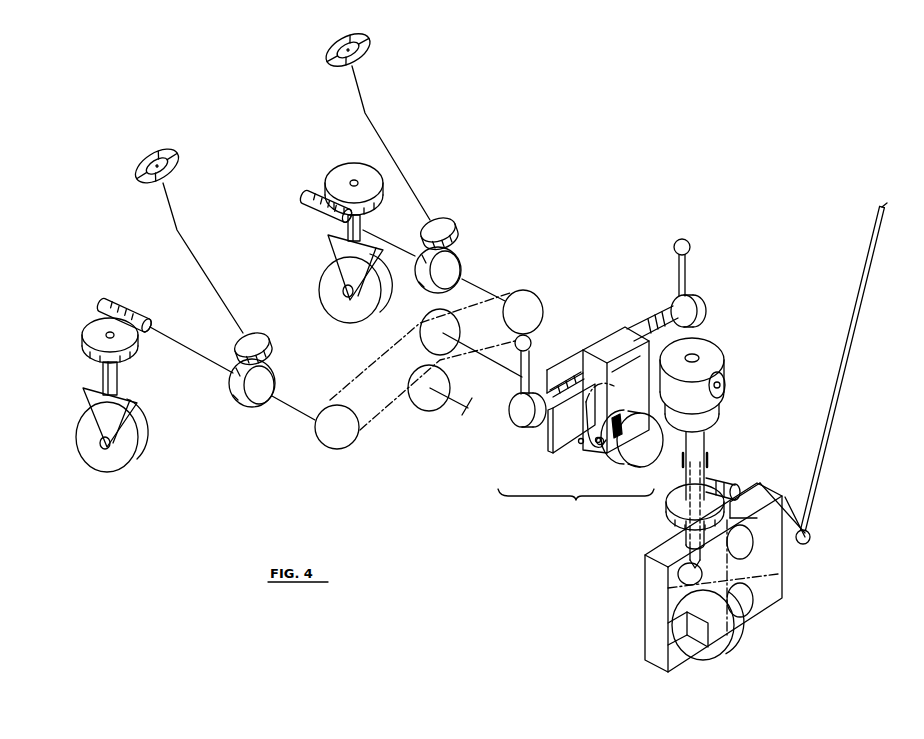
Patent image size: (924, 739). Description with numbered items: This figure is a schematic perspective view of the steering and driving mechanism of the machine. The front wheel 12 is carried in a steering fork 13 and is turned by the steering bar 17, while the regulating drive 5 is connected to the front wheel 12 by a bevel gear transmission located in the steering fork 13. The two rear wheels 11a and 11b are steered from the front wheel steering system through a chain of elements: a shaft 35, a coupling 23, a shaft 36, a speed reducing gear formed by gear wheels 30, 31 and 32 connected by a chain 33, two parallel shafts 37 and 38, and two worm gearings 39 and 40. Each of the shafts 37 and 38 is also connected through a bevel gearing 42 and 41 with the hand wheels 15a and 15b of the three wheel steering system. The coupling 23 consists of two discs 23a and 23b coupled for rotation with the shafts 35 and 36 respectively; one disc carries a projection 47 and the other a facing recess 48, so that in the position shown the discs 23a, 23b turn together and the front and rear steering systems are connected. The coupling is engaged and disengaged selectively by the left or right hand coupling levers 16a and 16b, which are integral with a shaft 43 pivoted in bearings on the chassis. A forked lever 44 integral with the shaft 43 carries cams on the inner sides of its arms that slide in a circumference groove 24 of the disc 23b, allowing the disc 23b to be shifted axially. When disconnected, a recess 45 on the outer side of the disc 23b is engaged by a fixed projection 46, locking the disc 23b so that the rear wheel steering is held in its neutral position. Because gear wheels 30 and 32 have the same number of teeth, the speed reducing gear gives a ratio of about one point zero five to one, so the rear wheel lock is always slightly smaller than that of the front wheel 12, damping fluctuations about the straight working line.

The regulating drive 5 is at (708, 362).
The rear wheel 11a is at (330, 280).
The rear wheel 11b is at (117, 463).
The front wheel 12 is at (722, 637).
The steering fork 13 is at (657, 609).
The hand wheel 15a is at (362, 53).
The hand wheel 15b is at (176, 158).
The coupling lever 16a is at (690, 245).
The coupling lever 16b is at (530, 345).
The steering bar 17 is at (833, 413).
The coupling 23 is at (576, 502).
The disc 23a is at (612, 452).
The disc 23b is at (598, 444).
The circumference groove 24 is at (622, 406).
The gear wheel 30 is at (347, 428).
The gear wheel 31 is at (442, 332).
The gear wheel 32 is at (528, 312).
The chain 33 is at (373, 370).
The shaft 35 is at (677, 461).
The shaft 36 is at (507, 369).
The parallel shaft 37 is at (287, 405).
The parallel shaft 38 is at (470, 283).
The worm gearing 39 is at (104, 311).
The worm gearing 40 is at (327, 196).
The bevel gearing 41 is at (232, 382).
The bevel gearing 42 is at (455, 244).
The shaft 43 is at (645, 331).
The forked lever 44 is at (640, 397).
The recess 45 is at (572, 405).
The fixed projection 46 is at (553, 415).
The projection 47 is at (618, 432).
The recess 48 is at (640, 442).